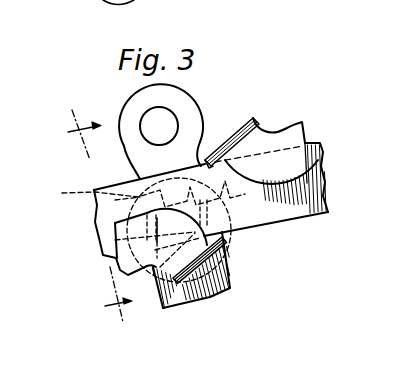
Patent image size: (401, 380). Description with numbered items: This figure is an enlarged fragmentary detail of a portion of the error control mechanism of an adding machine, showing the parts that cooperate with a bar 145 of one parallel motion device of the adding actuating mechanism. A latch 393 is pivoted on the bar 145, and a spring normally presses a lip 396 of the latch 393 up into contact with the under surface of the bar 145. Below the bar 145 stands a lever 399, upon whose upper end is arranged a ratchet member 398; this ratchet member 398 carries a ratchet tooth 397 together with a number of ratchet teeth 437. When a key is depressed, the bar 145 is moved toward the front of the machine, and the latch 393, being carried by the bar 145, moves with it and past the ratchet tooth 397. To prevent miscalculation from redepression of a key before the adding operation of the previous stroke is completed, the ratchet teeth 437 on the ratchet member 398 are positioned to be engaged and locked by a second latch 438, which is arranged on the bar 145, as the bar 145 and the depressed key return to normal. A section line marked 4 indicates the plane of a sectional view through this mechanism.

The section line 4- 4 is at (100, 215).
The bar 145 is at (313, 205).
The latch 438 is at (288, 136).
The ratchet teeth 437 is at (138, 230).
The latch 393 is at (133, 265).
The ratchet member 398 is at (235, 205).
The lip 396 is at (224, 247).
The ratchet tooth 397 is at (163, 298).
The lever 399 is at (220, 287).